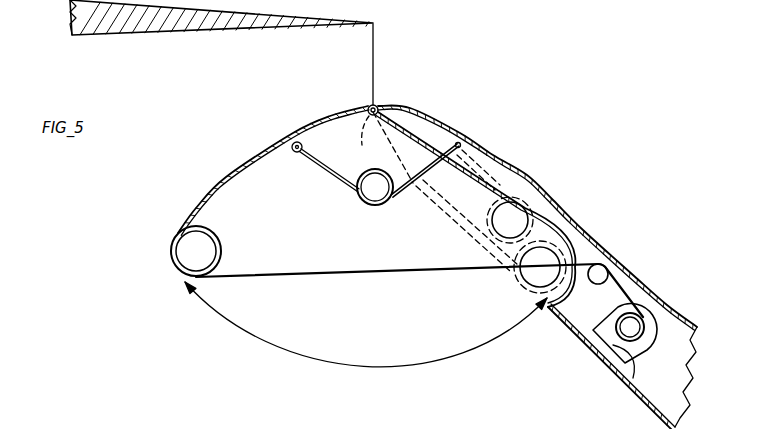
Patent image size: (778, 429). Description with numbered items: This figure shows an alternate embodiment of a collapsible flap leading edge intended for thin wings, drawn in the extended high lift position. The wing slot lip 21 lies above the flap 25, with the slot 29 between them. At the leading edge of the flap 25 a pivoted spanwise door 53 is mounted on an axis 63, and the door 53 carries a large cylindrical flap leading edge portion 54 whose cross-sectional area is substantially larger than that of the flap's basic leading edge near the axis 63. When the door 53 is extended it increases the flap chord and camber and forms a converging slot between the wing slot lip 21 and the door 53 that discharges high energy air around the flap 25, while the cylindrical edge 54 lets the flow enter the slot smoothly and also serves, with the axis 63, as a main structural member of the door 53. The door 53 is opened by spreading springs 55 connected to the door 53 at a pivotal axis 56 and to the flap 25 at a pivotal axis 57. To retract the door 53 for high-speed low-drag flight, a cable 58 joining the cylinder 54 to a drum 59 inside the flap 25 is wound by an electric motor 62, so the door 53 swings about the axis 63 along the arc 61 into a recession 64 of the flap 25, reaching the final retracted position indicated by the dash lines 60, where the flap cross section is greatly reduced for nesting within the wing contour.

The wing slot lip 21 is at (374, 23).
The flap 25 is at (601, 237).
The slot 29 is at (378, 52).
The door 53 is at (230, 180).
The cylindrical flap leading edge portion 54 is at (222, 238).
The spreading springs 55 is at (373, 207).
The pivotal axis 56 is at (296, 142).
The pivotal axis 57 is at (468, 144).
The cable 58 is at (430, 265).
The drum 59 is at (612, 346).
The dash lines 60 is at (521, 290).
The arc 61 is at (297, 355).
The electric motor 62 is at (633, 376).
The axis 63 is at (370, 118).
The recession 64 is at (518, 170).